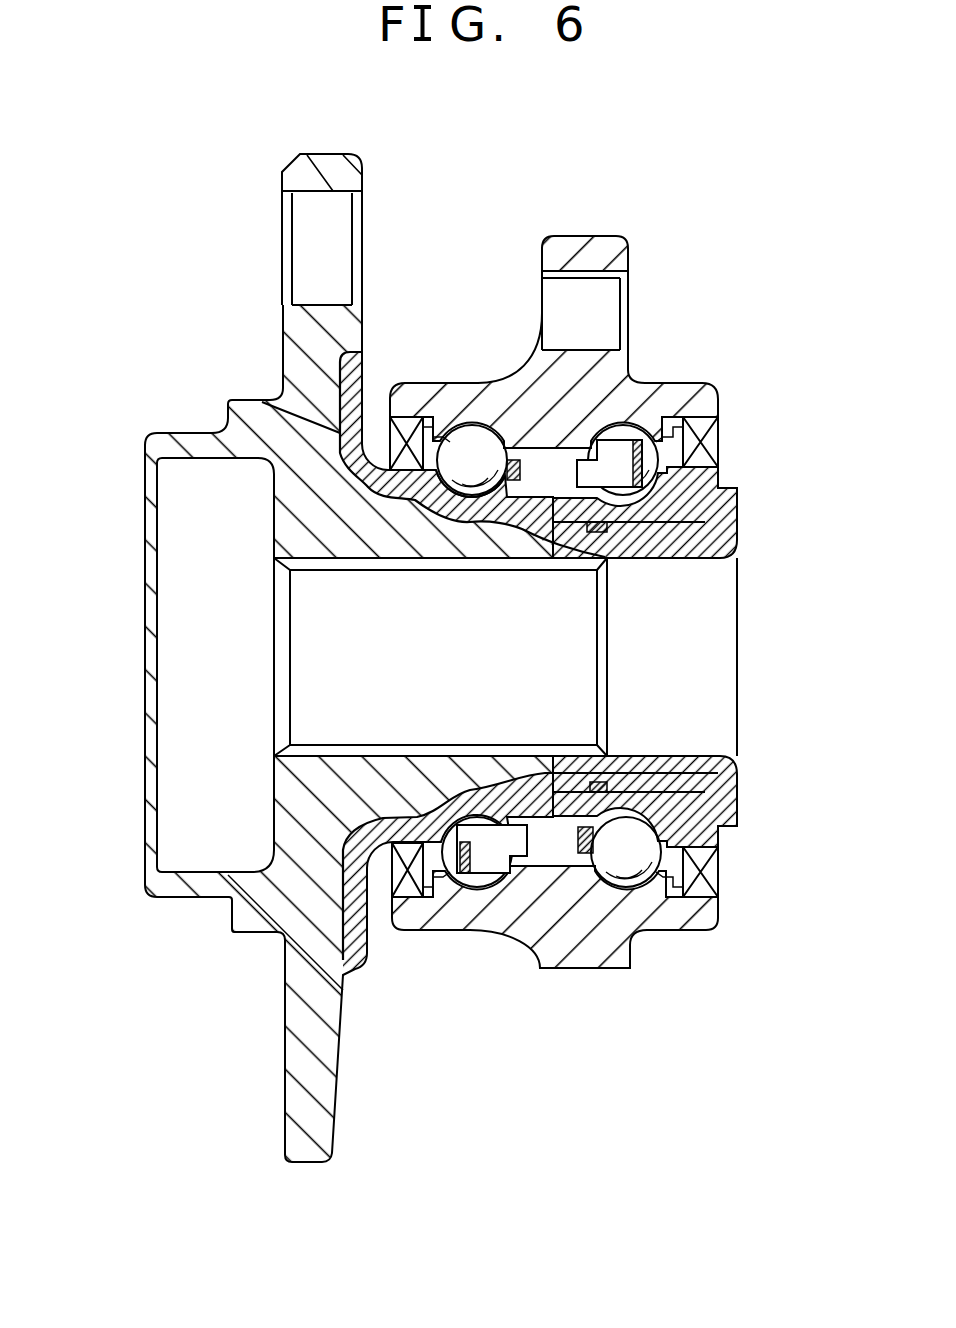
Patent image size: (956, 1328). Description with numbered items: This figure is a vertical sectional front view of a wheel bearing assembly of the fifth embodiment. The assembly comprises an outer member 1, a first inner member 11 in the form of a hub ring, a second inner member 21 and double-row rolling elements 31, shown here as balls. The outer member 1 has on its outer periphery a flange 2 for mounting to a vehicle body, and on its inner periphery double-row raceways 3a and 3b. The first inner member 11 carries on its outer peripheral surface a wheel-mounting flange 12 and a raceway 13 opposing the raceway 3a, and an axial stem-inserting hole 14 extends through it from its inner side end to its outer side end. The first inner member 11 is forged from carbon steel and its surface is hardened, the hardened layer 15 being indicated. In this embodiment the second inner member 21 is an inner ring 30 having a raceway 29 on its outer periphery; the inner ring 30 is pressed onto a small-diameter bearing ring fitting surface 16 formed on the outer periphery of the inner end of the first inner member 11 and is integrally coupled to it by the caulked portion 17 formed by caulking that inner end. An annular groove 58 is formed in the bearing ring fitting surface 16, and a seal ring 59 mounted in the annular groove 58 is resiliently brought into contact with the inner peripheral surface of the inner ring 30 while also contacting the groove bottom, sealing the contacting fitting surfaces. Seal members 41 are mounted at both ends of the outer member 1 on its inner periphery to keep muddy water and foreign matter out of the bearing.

The outer member 1 is at (513, 360).
The flange 2 is at (606, 238).
The raceway 3a is at (463, 447).
The raceway 3b is at (640, 430).
The first inner member 11 is at (279, 334).
The wheel-mounting flange 12 is at (302, 174).
The raceway 13 is at (460, 487).
The stem-inserting hole 14 is at (318, 573).
The hardened layer 15 is at (496, 512).
The bearing ring fitting surface 16 is at (724, 482).
The caulked portion 17 is at (725, 513).
The second inner member 21 is at (704, 428).
The raceway 29 is at (636, 476).
The inner ring 30 is at (704, 794).
The rolling elements 31 is at (538, 935).
The seal members 41 is at (393, 443).
The annular groove 58 is at (596, 534).
The seal ring 59 is at (600, 781).